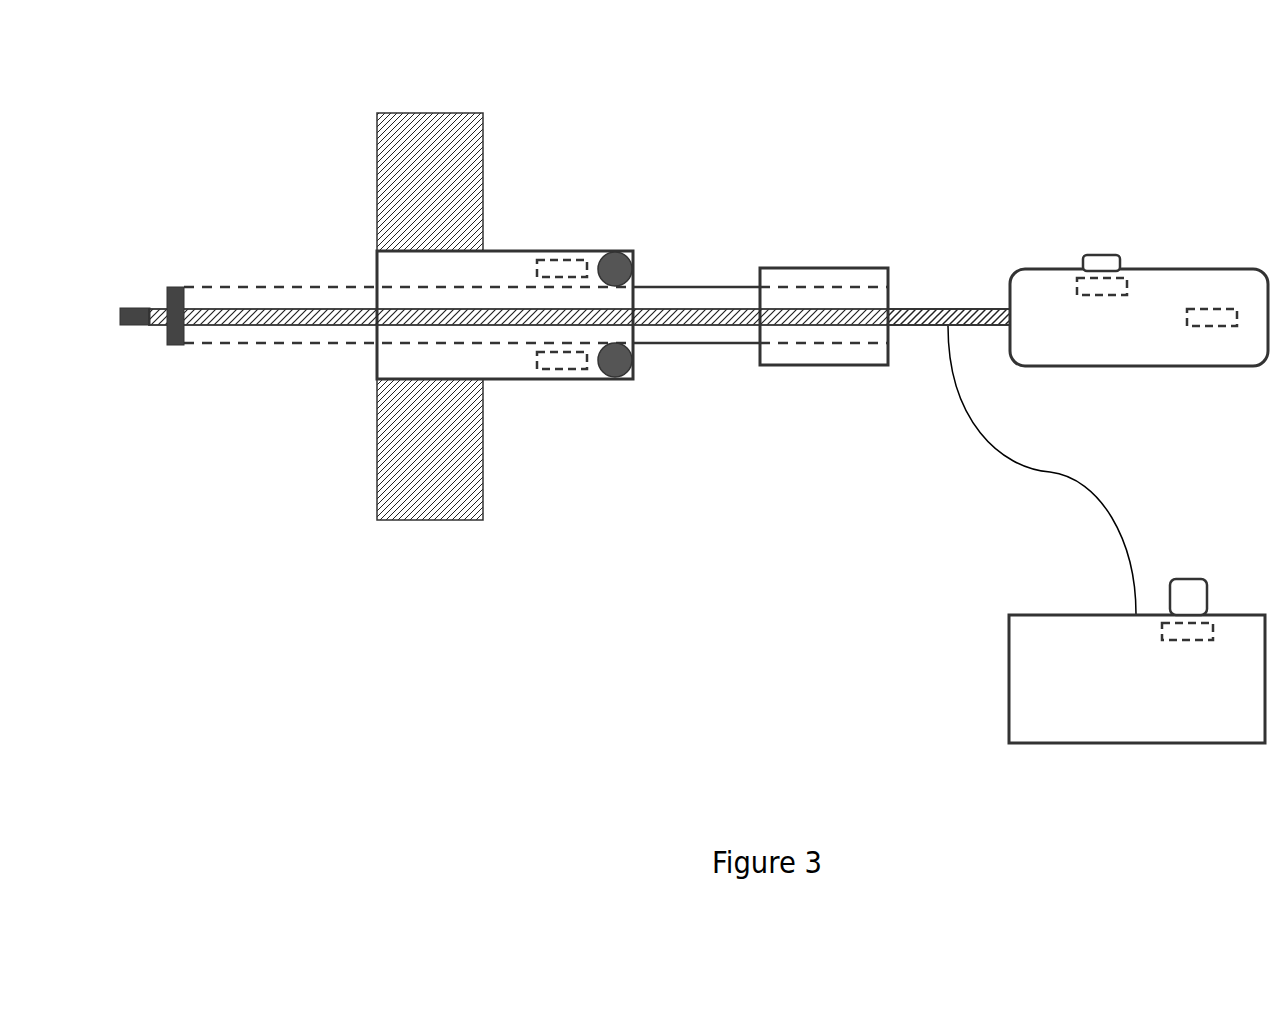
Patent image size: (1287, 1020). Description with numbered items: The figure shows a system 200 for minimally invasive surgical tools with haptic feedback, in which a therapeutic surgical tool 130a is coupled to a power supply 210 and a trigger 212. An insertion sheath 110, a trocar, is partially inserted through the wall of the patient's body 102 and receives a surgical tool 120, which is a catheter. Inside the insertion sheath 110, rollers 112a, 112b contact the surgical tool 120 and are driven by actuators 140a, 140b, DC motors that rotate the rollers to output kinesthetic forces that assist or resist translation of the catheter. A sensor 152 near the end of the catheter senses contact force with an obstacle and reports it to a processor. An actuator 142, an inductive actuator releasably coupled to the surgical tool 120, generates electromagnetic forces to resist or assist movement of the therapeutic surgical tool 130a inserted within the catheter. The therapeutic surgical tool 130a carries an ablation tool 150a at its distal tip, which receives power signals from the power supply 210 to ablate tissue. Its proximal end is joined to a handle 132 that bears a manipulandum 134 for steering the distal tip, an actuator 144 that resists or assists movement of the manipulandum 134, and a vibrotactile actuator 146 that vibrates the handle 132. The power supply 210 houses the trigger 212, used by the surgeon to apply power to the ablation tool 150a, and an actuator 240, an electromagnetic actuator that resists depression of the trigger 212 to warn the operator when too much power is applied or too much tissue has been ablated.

The patient's body 102 is at (452, 564).
The insertion sheath 110 is at (505, 248).
The roller 112a is at (617, 250).
The roller 112b is at (613, 382).
The surgical tool 120 is at (698, 287).
The therapeutic surgical tool 130a is at (948, 308).
The handle 132 is at (1139, 317).
The manipulandum 134 is at (1100, 255).
The actuator 140a is at (563, 260).
The actuator 140b is at (565, 380).
The actuator 142 is at (827, 268).
The actuator 144 is at (1125, 290).
The vibrotactile actuator 146 is at (1211, 309).
The ablation tool 150a is at (135, 308).
The sensor 152 is at (172, 347).
The system 200 is at (1084, 405).
The power supply 210 is at (1137, 679).
The trigger 212 is at (1188, 579).
The actuator 240 is at (1213, 630).